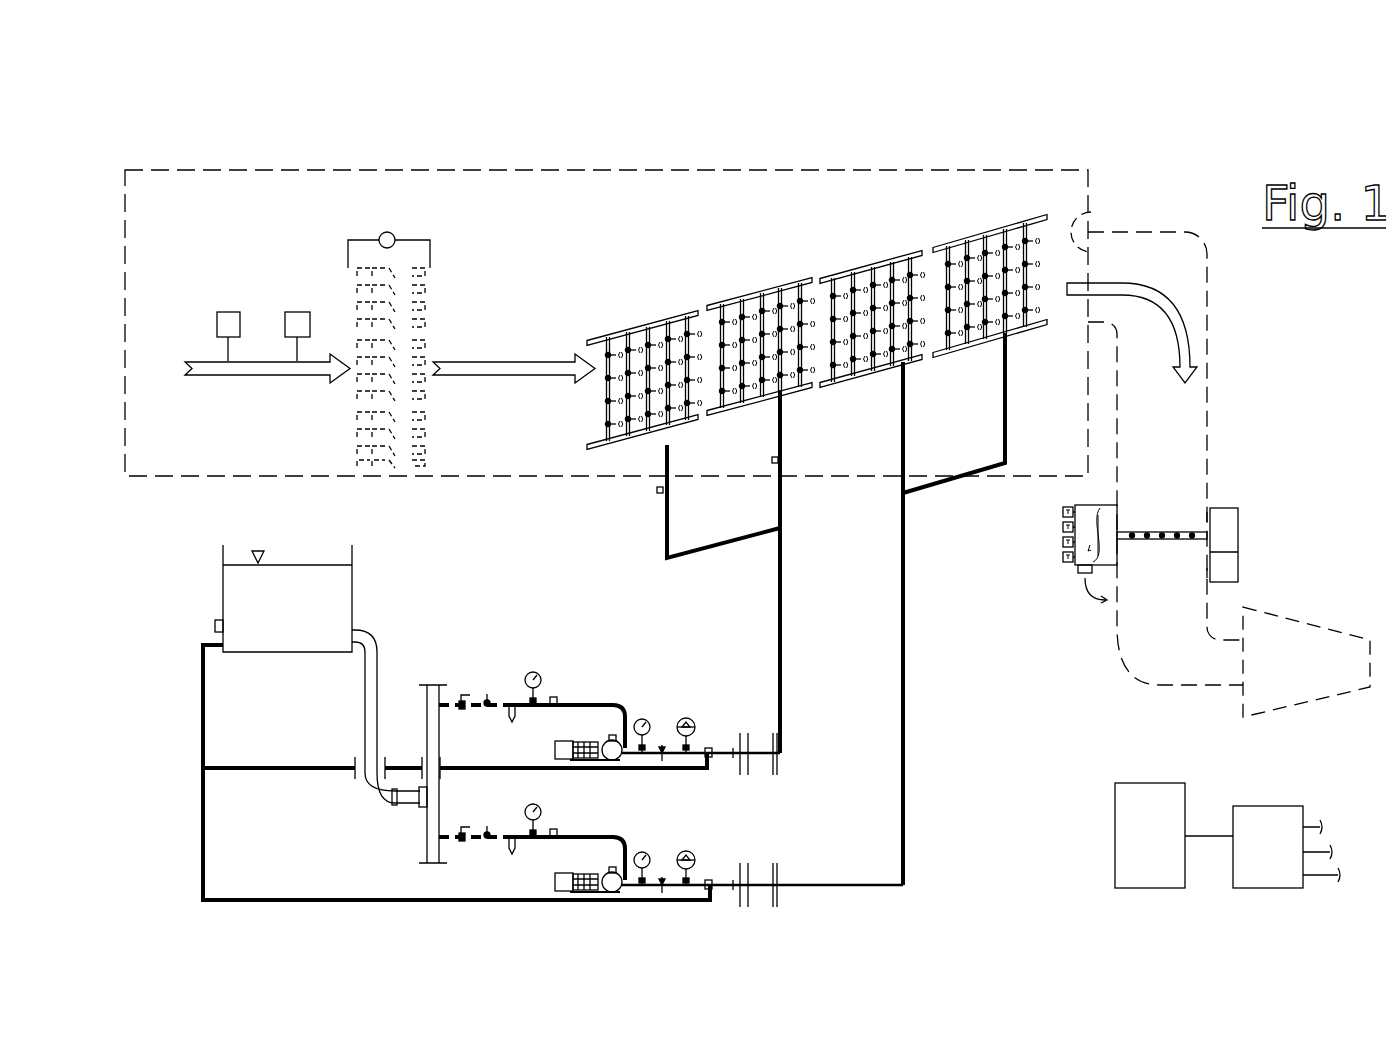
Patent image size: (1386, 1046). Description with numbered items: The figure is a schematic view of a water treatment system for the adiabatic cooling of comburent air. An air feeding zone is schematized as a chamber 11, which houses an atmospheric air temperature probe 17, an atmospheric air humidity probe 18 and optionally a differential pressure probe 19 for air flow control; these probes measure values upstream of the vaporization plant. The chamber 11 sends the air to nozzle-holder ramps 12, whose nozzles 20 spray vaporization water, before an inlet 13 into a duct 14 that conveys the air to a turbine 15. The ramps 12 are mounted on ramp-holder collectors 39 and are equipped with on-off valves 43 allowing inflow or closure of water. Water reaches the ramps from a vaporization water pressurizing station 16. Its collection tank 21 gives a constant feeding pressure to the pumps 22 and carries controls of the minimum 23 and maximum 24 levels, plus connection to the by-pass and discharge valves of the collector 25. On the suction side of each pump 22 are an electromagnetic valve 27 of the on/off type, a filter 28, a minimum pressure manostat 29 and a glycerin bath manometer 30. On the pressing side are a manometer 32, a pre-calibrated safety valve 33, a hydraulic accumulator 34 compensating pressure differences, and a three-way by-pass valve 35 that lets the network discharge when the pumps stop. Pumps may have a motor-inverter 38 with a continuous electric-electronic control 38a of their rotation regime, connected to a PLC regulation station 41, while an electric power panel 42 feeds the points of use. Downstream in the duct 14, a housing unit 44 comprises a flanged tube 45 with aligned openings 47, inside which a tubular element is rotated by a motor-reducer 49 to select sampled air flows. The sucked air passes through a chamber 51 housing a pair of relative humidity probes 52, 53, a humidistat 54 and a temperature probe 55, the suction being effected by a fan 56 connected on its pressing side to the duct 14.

The chamber 11 is at (975, 181).
The nozzle-holder ramps 12 is at (687, 331).
The inlet 13 is at (1093, 208).
The duct 14 is at (1195, 296).
The turbine 15 is at (1295, 628).
The vaporization water pressurizing station 16 is at (563, 641).
The atmospheric air temperature probe 17 is at (226, 310).
The atmospheric air humidity probe 18 is at (295, 310).
The differential pressure probe 19 is at (392, 232).
The nozzles 20 is at (648, 421).
The collection tank 21 is at (338, 590).
The pumps 22 is at (614, 735).
The minimum level control 23 is at (215, 624).
The maximum level control 24 is at (262, 548).
The collector 25 is at (428, 722).
The electromagnetic valve 27 is at (487, 697).
The filter 28 is at (512, 703).
The minimum pressure manostat 29 is at (556, 696).
The glycerin bath manometer 30 is at (534, 671).
The manometer 32 is at (647, 718).
The safety valve 33 is at (662, 745).
The hydraulic accumulator 34 is at (690, 718).
The three-way by-pass valve 35 is at (709, 747).
The motor-inverter 38 is at (585, 741).
The electric-electronic control 38a is at (566, 742).
The ramp-holder collectors 39 is at (685, 424).
The PLC regulation station 41 is at (1128, 808).
The electric power panel 42 is at (1280, 820).
The on-off valves 43 is at (657, 491).
The housing unit 44 is at (1155, 508).
The flanged tube 45 is at (1154, 541).
The openings 47 is at (1192, 541).
The motor-reducer 49 is at (1227, 527).
The chamber 51 is at (1112, 511).
The relative humidity probe 52 is at (1063, 543).
The relative humidity probe 53 is at (1063, 559).
The humidistat 54 is at (1063, 512).
The temperature probe 55 is at (1063, 528).
The fan 56 is at (1084, 574).